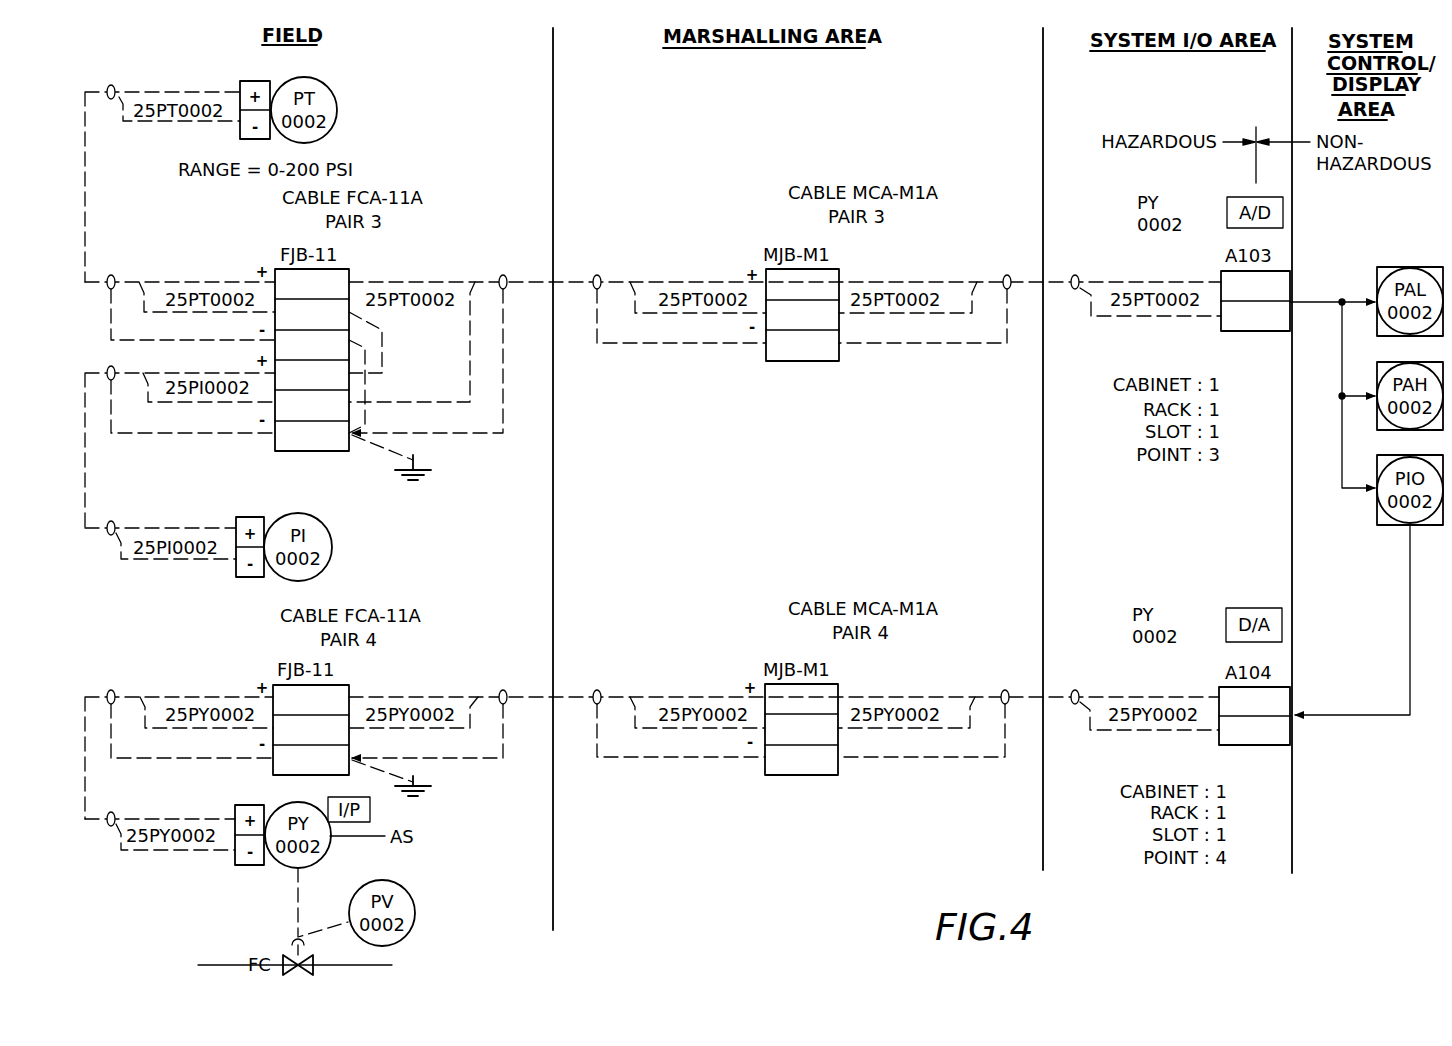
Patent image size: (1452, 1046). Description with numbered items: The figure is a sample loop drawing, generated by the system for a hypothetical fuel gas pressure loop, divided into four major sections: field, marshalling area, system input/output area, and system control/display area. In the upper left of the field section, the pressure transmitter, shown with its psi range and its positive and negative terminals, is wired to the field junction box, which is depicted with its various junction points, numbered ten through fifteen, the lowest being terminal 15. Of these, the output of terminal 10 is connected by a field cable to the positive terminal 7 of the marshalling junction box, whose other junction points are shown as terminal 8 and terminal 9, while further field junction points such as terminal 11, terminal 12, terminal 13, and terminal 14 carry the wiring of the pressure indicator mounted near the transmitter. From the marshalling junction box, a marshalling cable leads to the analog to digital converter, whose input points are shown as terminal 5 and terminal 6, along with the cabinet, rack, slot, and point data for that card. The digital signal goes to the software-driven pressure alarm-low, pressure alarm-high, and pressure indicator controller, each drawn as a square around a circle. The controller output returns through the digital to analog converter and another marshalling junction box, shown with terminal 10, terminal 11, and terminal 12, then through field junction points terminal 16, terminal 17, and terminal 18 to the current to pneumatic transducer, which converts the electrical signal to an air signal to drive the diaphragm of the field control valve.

The A103 input terminal 5 is at (1255, 286).
The A103 input terminal 6 is at (1255, 316).
The positive terminal 7 is at (1028, 492).
The terminal 8 is at (1028, 522).
The MJB-M1 terminal 9 is at (802, 345).
The terminal 10 is at (556, 491).
The terminal 11 is at (556, 522).
The terminal 12 is at (556, 552).
The FJB-11 terminal 13 is at (312, 375).
The FJB-11 terminal 14 is at (312, 405).
The FJB-11 terminal 15 is at (312, 436).
The FJB-11 terminal 16 is at (311, 700).
The FJB-11 terminal 17 is at (311, 730).
The FJB-11 terminal 18 is at (311, 760).